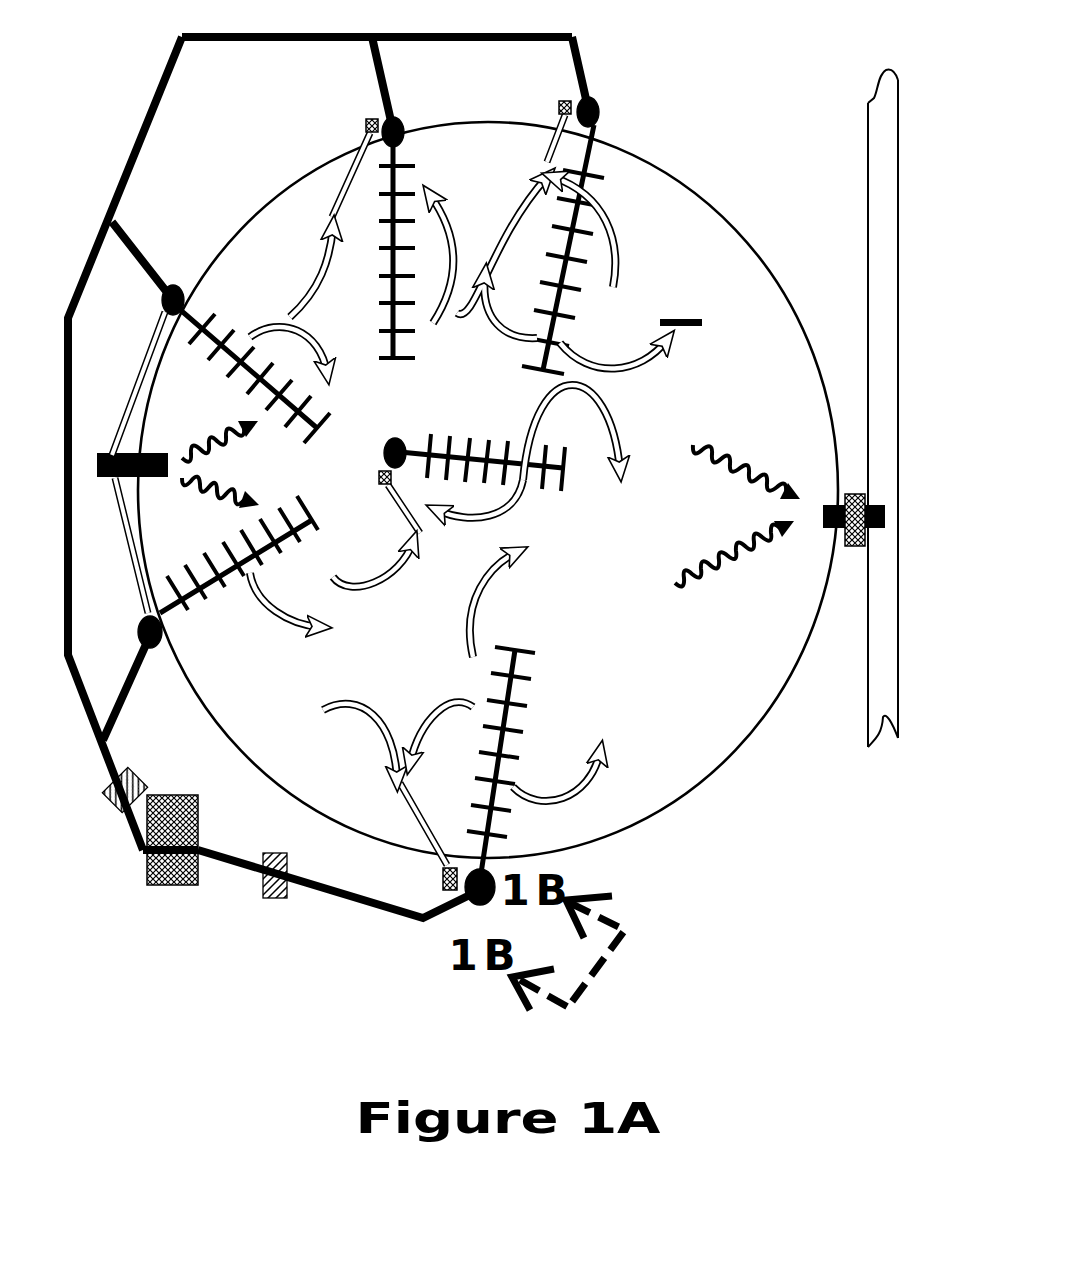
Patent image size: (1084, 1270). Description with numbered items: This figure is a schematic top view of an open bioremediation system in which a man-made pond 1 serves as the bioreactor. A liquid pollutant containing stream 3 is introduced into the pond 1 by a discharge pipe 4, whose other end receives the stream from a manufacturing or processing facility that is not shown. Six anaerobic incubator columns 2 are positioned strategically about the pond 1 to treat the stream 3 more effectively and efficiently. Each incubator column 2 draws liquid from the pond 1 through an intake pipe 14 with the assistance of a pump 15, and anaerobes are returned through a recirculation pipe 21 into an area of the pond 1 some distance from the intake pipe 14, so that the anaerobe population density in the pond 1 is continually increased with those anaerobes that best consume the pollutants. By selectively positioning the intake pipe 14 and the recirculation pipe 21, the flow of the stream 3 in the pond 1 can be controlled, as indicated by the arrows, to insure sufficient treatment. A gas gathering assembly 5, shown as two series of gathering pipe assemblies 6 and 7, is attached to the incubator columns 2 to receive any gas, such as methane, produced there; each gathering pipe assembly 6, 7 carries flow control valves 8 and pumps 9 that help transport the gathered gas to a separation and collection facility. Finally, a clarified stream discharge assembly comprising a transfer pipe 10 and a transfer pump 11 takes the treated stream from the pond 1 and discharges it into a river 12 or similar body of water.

The pond 1 is at (700, 197).
The anaerobic incubator columns 2 is at (160, 306).
The liquid pollutant containing stream 3 is at (681, 301).
The discharge pipe 4 is at (100, 483).
The gas gathering assembly 5 is at (147, 147).
The gathering pipe assembly 6 is at (127, 153).
The gathering pipe assembly 7 is at (317, 905).
The flow control valves 8 is at (118, 813).
The pumps 9 is at (198, 867).
The transfer pipe 10 is at (830, 502).
The transfer pump 11 is at (855, 548).
The river 12 is at (887, 205).
The intake pipe 14 is at (350, 167).
The pump 15 is at (366, 120).
The recirculation pipe 21 is at (313, 507).